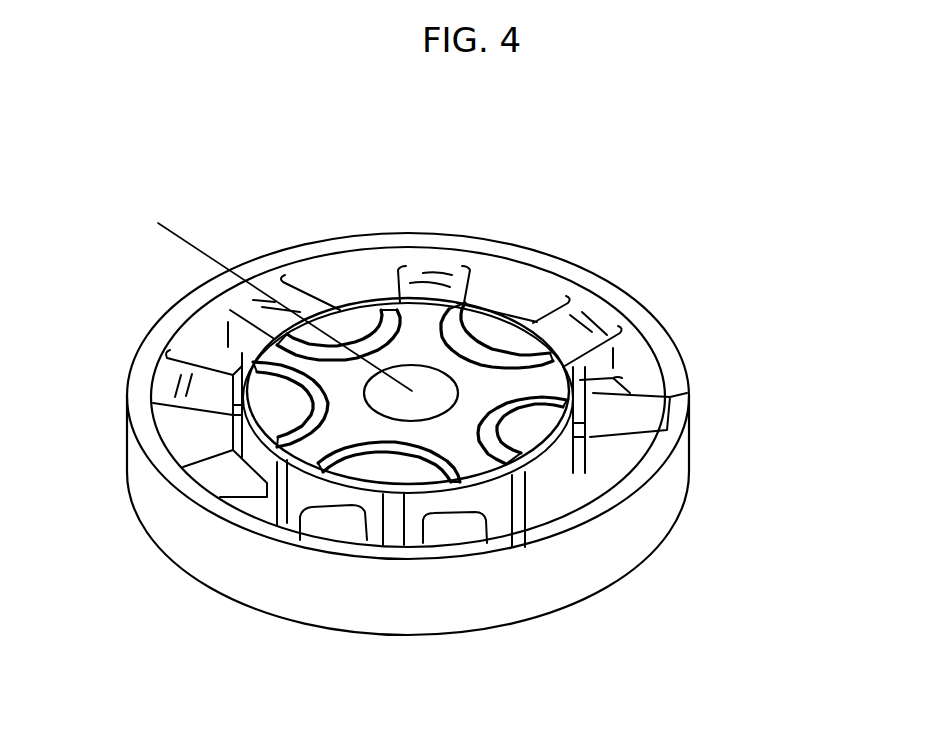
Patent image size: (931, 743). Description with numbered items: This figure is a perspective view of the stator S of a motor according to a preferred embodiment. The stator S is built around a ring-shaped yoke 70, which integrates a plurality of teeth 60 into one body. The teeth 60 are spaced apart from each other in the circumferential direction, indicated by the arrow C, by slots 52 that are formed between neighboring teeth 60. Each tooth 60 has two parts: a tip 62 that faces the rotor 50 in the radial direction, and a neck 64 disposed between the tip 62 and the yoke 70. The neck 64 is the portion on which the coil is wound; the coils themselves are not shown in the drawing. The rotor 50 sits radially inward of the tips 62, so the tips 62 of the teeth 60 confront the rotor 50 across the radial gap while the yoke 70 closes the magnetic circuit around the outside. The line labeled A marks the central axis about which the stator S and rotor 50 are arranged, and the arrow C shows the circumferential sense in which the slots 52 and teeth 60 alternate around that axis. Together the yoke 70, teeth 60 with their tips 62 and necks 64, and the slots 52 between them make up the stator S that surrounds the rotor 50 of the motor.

The rotor 50 is at (533, 427).
The slot 52 is at (523, 273).
The tooth 60 is at (633, 366).
The tip 62 is at (563, 367).
The neck 64 is at (657, 410).
The ring-shaped yoke 70 is at (592, 277).
The axis A is at (172, 237).
The circumferential direction C is at (377, 213).
The stator S is at (492, 225).